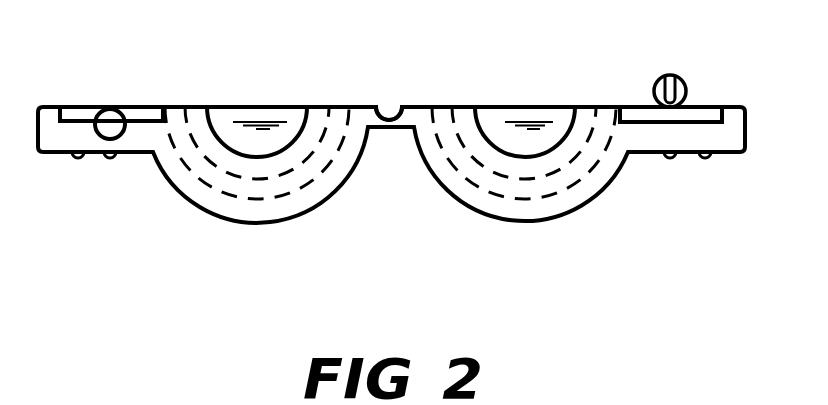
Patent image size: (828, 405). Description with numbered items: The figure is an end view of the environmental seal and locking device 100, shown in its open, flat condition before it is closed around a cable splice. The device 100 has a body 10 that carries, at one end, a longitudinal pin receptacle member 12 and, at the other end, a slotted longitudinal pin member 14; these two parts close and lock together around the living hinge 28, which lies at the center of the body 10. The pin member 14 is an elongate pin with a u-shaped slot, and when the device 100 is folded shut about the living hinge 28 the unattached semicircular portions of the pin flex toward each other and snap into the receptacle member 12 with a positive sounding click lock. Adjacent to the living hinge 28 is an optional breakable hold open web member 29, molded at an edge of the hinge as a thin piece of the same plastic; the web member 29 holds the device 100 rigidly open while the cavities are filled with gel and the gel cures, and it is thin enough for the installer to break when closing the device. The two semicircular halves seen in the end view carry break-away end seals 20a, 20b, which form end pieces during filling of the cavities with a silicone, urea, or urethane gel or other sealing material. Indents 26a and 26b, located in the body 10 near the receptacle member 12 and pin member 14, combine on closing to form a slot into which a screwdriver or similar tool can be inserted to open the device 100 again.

The environmental seal and locking device 100 is at (390, 167).
The body 10 is at (135, 140).
The longitudinal pin receptacle member 12 is at (98, 108).
The slotted longitudinal pin member 14 is at (683, 90).
The break-away end seal 20a is at (530, 126).
The break-away end seal 20b is at (254, 128).
The indent 26a is at (680, 114).
The indent 26b is at (73, 113).
The living hinge 28 is at (390, 106).
The breakable hold open web member 29 is at (391, 124).